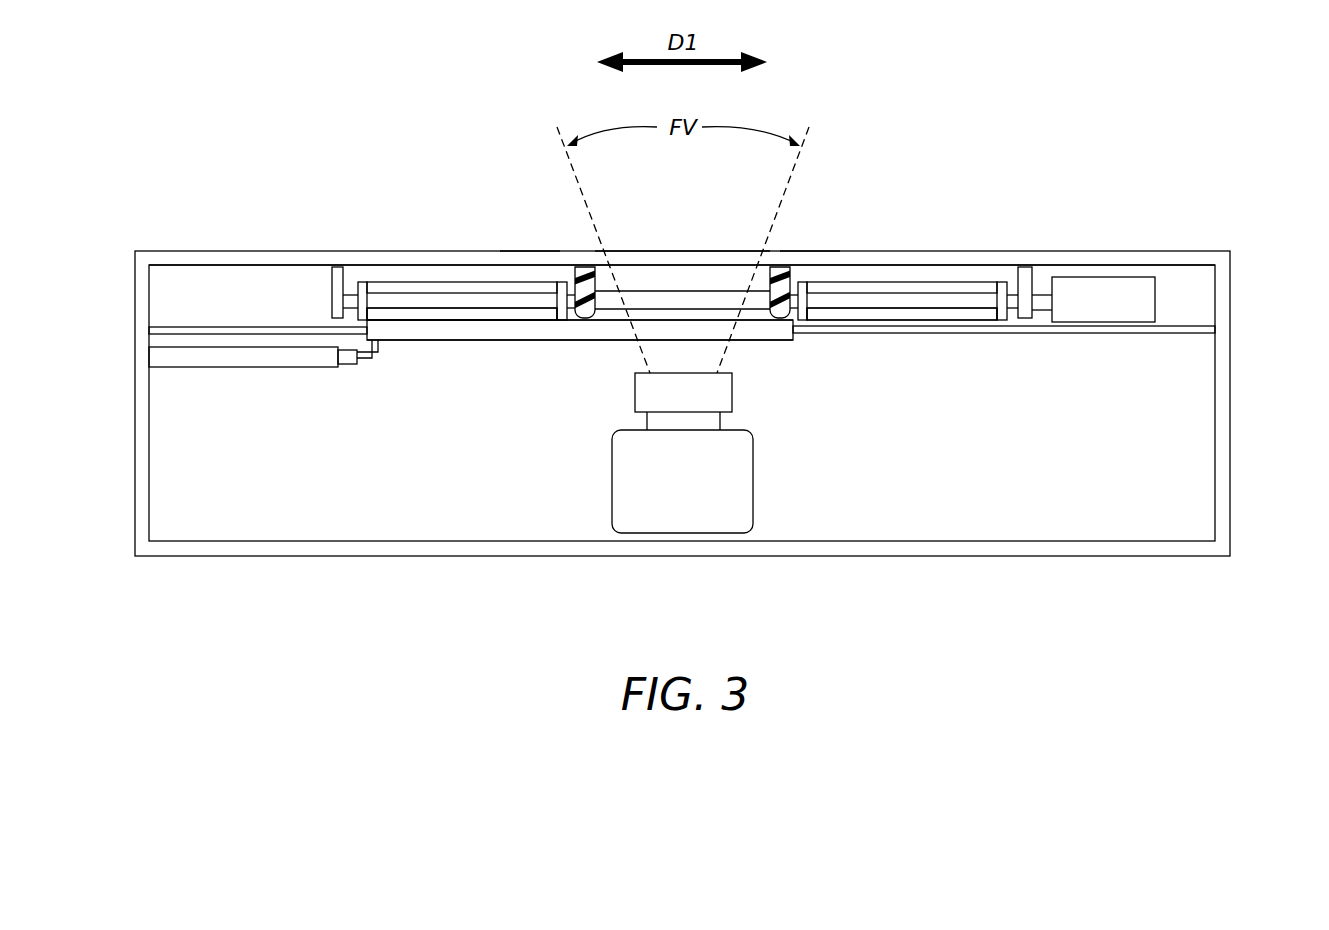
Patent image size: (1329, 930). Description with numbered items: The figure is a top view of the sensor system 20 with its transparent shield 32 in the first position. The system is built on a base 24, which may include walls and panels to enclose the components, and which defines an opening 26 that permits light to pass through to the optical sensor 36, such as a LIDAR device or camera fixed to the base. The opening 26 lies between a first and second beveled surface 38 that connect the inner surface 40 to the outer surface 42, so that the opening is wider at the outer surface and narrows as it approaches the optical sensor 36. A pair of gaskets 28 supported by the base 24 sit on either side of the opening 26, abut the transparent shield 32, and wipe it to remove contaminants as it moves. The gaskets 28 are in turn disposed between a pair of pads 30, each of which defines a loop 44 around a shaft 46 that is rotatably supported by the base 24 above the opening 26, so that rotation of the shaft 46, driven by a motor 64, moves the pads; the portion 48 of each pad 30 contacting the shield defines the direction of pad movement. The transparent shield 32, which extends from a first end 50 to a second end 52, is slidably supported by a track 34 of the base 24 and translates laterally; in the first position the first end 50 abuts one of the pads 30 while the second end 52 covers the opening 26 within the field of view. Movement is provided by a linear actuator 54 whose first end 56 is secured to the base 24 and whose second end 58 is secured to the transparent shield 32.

The sensor system 20 is at (1207, 181).
The base 24 is at (1232, 320).
The opening 26 is at (673, 258).
The gaskets 28 is at (594, 262).
The pads 30 is at (377, 298).
The transparent shield 32 is at (607, 334).
The track 34 is at (247, 330).
The optical sensor 36 is at (754, 488).
The beveled surface 38 is at (605, 258).
The inner surface 40 is at (508, 272).
The outer surface 42 is at (531, 251).
The loop 44 is at (483, 288).
The shaft 46 is at (350, 298).
The portion of the pads 48 is at (497, 322).
The first end 50 is at (446, 332).
The second end 52 is at (693, 330).
The linear actuator 54 is at (323, 358).
The first end 56 is at (162, 358).
The second end 58 is at (370, 362).
The motor 64 is at (1105, 300).